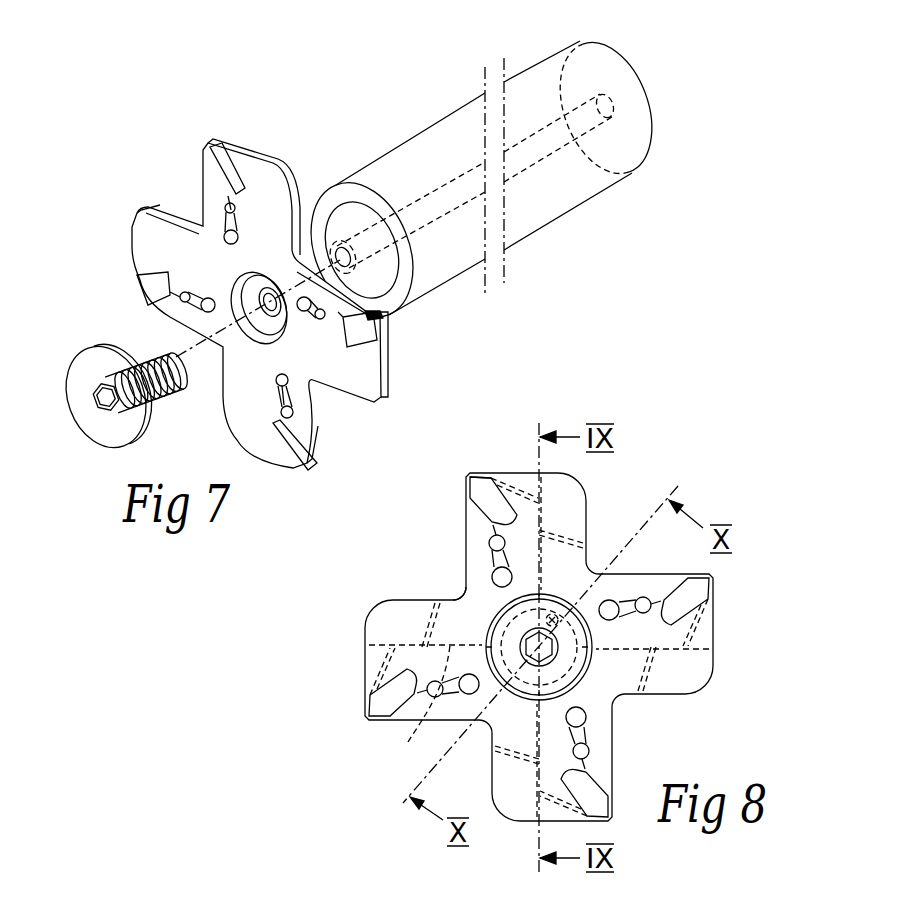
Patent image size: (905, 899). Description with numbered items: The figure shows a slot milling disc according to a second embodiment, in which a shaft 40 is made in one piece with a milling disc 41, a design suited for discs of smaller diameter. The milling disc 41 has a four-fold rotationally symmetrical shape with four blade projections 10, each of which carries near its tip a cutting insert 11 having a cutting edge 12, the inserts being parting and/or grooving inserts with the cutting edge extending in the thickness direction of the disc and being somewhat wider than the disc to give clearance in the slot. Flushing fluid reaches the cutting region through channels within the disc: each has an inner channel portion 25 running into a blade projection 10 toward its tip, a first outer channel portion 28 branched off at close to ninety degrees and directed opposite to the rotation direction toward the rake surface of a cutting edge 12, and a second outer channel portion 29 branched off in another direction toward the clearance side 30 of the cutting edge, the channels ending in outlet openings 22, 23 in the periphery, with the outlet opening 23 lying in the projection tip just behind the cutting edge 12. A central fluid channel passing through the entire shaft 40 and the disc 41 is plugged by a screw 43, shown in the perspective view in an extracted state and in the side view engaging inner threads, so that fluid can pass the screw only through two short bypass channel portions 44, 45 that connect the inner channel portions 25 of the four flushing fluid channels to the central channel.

In FIG. 8, the blade projection 10 is at (530, 617).
In FIG. 8, the cutting insert 11 is at (466, 478).
In FIG. 7, the cutting edge 12 is at (296, 473).
In FIG. 8, the cutting edge 12 is at (473, 482).
In FIG. 8, the outlet opening 22 is at (438, 598).
In FIG. 8, the outlet opening 23 is at (367, 690).
In FIG. 8, the inner channel portion 25 is at (422, 706).
In FIG. 8, the first outer channel portion 28 is at (417, 628).
In FIG. 8, the second outer channel portion 29 is at (368, 650).
In FIG. 8, the clearance side 30 is at (713, 585).
In FIG. 7, the shaft 40 is at (594, 185).
In FIG. 7, the milling disc 41 is at (265, 336).
In FIG. 8, the milling disc 41 is at (685, 673).
In FIG. 7, the screw 43 is at (92, 371).
In FIG. 8, the bypass channel portion 44 is at (555, 612).
In FIG. 7, the bypass channel portion 45 is at (255, 320).
In FIG. 8, the bypass channel portion 45 is at (513, 648).